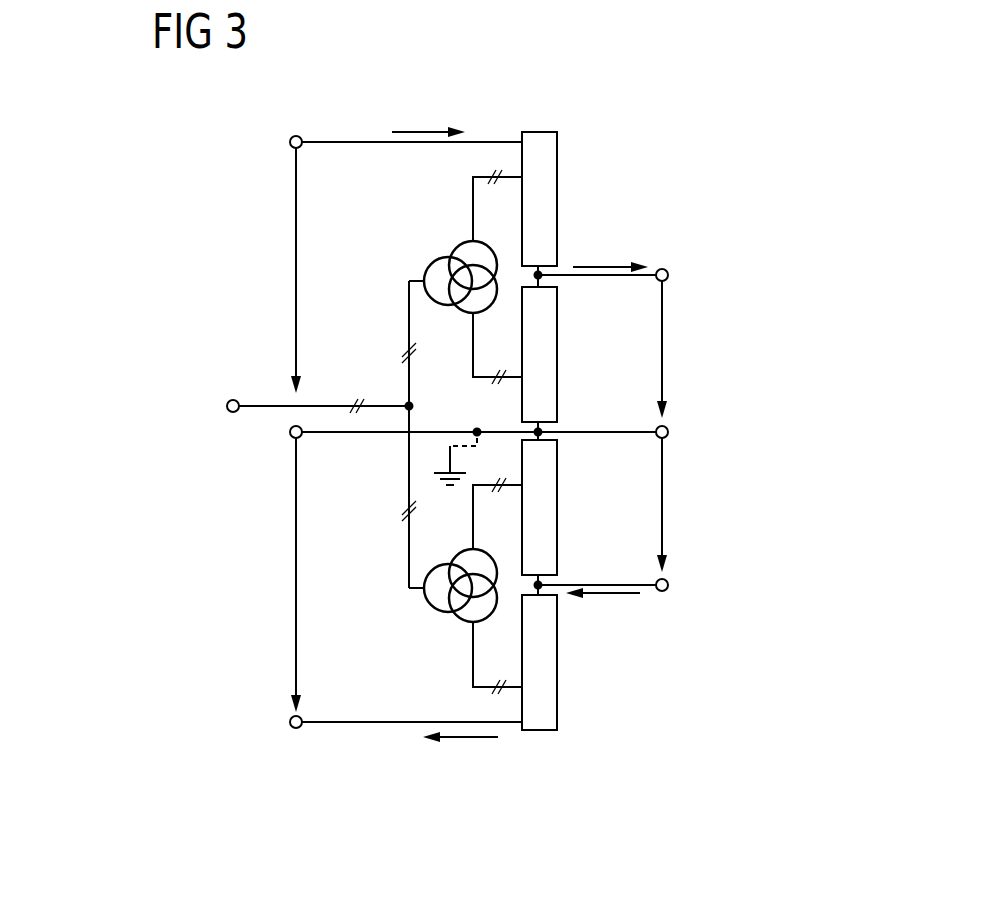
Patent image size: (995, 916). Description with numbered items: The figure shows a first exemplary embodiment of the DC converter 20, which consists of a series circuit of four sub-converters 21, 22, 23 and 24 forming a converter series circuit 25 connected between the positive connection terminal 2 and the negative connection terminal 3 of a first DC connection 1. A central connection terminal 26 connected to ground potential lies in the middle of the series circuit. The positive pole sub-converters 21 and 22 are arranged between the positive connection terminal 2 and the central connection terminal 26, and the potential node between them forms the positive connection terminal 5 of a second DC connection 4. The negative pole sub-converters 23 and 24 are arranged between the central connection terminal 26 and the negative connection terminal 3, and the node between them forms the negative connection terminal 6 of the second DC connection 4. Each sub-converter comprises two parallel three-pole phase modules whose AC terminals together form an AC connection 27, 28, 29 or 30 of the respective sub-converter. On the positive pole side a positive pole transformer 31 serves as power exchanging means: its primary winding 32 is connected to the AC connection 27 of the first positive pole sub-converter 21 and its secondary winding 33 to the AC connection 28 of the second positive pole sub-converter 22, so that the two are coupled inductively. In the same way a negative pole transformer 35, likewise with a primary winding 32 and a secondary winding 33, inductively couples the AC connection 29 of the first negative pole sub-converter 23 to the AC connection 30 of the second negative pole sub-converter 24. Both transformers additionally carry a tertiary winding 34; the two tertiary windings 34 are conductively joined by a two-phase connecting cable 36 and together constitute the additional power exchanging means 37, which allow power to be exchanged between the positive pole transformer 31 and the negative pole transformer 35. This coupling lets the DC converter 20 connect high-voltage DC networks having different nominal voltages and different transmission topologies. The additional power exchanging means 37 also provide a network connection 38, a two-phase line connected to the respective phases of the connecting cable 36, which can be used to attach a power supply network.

The first DC connection 1 is at (125, 497).
The positive connection terminal 2 is at (322, 141).
The negative connection terminal 3 is at (305, 730).
The second DC connection 4 is at (745, 578).
The positive connection terminal 5 is at (662, 268).
The fourth DC terminal 6 is at (662, 592).
The DC converter 20 is at (712, 188).
The first positive pole sub-converter 21 is at (558, 174).
The second positive pole sub-converter 22 is at (558, 330).
The first negative pole sub-converter 23 is at (558, 495).
The second negative pole sub-converter 24 is at (558, 675).
The converter series circuit 25 is at (585, 145).
The central connection terminal 26 is at (290, 433).
The AC connection 27 is at (516, 170).
The AC connection 28 is at (498, 376).
The AC connection 29 is at (510, 487).
The AC connection 30 is at (508, 684).
The positive pole transformer 31 is at (405, 264).
The primary winding 32 is at (462, 240).
The secondary winding 33 is at (463, 312).
The tertiary winding 34 is at (430, 265).
The negative pole transformer 35 is at (405, 600).
The connecting cable 36 is at (409, 478).
The additional power exchanging means 37 is at (207, 385).
The network connection 38 is at (227, 407).